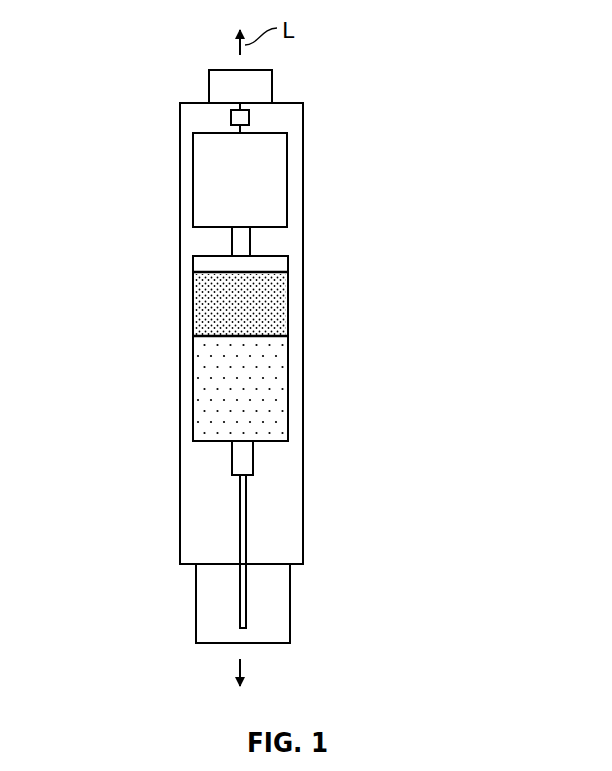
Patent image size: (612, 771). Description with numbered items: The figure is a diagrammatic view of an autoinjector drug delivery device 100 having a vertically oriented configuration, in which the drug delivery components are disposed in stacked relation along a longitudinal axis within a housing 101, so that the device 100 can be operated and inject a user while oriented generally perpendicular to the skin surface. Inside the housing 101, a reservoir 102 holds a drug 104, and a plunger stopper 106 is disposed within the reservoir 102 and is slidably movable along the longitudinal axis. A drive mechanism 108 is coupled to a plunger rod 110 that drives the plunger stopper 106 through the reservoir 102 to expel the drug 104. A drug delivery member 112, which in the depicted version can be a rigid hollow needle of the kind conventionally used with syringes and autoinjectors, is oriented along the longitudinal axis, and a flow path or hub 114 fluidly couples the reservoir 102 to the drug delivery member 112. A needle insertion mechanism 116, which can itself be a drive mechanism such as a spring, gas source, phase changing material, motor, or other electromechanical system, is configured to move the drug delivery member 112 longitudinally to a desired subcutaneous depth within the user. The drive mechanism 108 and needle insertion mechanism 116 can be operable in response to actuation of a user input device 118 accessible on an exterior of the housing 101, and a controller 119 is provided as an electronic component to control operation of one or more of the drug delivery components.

The drug delivery device 100 is at (380, 59).
The housing 101 is at (180, 155).
The reservoir 102 is at (288, 368).
The drug 104 is at (202, 362).
The plunger stopper 106 is at (277, 303).
The drive mechanism 108 is at (287, 190).
The plunger rod 110 is at (250, 240).
The drug delivery member 112 is at (240, 532).
The hub 114 is at (253, 458).
The needle insertion mechanism 116 is at (193, 213).
The user input device 118 is at (209, 80).
The controller 119 is at (231, 118).